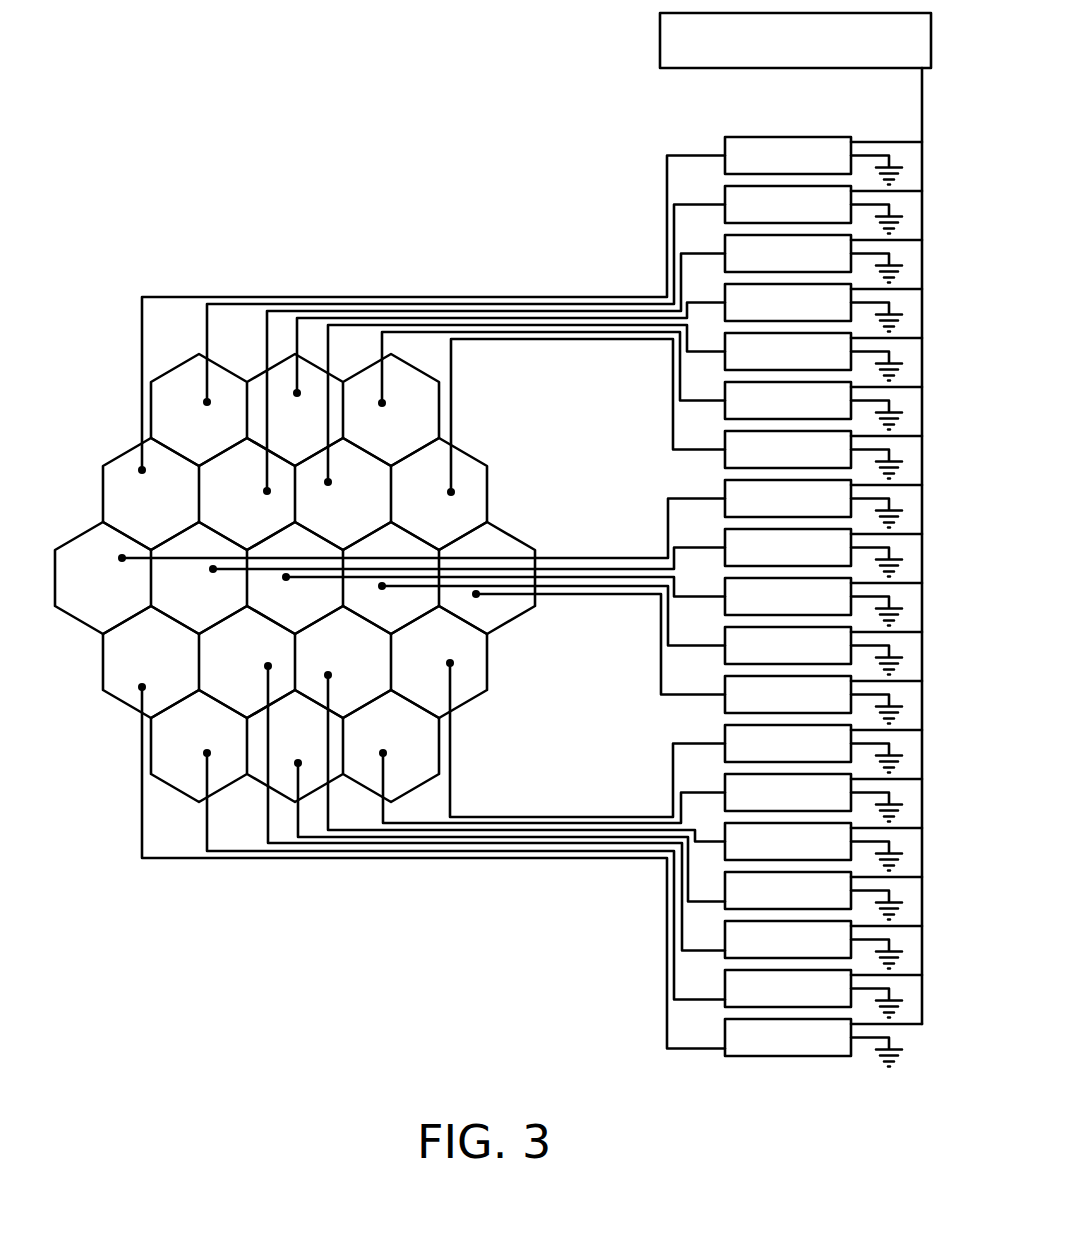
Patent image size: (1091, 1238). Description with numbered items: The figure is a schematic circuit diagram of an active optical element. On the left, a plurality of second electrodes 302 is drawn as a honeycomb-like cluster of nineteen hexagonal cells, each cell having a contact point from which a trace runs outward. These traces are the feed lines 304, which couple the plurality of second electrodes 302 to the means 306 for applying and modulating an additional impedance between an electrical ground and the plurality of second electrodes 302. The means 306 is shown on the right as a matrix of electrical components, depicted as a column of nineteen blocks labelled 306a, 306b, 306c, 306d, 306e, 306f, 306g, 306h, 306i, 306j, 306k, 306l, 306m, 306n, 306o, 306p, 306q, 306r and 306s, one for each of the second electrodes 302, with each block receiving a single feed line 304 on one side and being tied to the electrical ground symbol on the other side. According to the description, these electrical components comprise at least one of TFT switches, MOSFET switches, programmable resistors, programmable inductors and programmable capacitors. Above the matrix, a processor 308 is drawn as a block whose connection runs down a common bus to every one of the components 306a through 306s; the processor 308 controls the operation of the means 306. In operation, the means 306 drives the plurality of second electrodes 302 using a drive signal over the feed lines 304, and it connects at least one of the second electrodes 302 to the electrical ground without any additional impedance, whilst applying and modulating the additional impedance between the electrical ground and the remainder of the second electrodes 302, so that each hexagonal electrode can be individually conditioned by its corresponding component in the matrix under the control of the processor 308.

The second electrodes 302 is at (80, 614).
The feed lines 304 is at (258, 306).
The means for applying and modulating an additional impedance 306 is at (637, 955).
The electrical component 306a is at (823, 161).
The electrical component 306b is at (823, 210).
The electrical component 306c is at (823, 259).
The electrical component 306d is at (823, 308).
The electrical component 306e is at (823, 357).
The electrical component 306f is at (823, 406).
The electrical component 306g is at (823, 455).
The electrical component 306h is at (823, 504).
The electrical component 306i is at (823, 553).
The electrical component 306j is at (823, 602).
The electrical component 306k is at (823, 651).
The electrical component 306l is at (823, 700).
The electrical component 306m is at (823, 749).
The electrical component 306n is at (823, 798).
The electrical component 306o is at (823, 847).
The electrical component 306p is at (823, 896).
The electrical component 306q is at (823, 945).
The electrical component 306r is at (823, 994).
The electrical component 306s is at (823, 1043).
The processor 308 is at (795, 518).